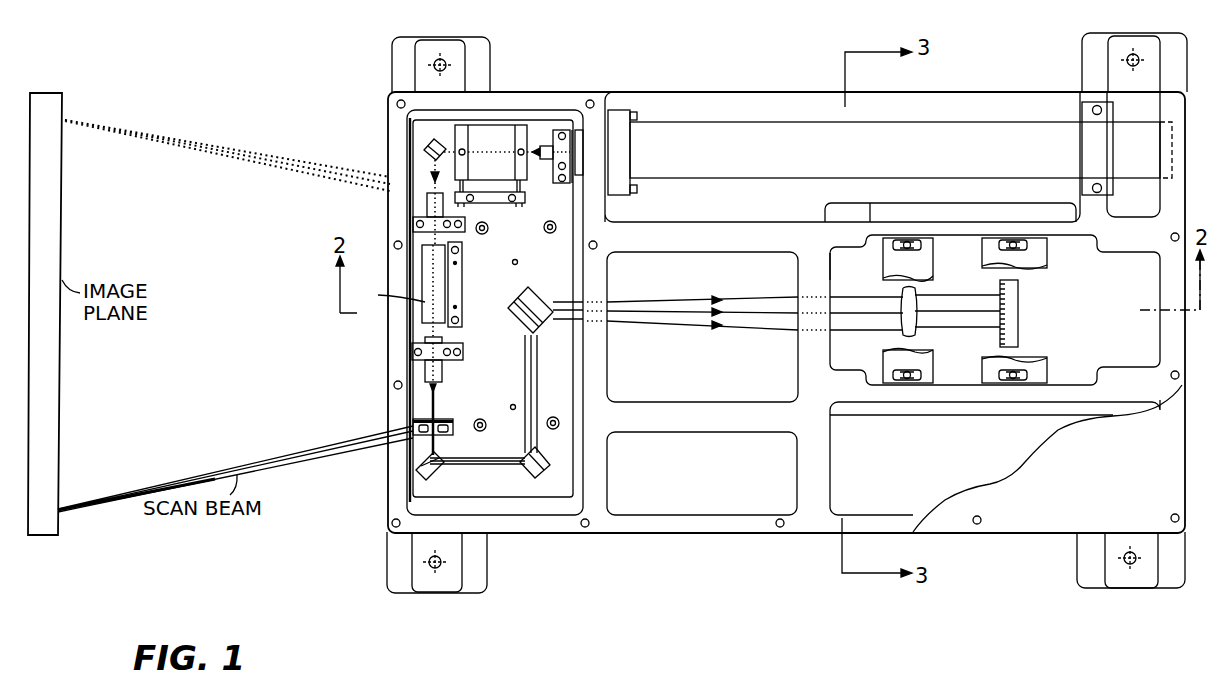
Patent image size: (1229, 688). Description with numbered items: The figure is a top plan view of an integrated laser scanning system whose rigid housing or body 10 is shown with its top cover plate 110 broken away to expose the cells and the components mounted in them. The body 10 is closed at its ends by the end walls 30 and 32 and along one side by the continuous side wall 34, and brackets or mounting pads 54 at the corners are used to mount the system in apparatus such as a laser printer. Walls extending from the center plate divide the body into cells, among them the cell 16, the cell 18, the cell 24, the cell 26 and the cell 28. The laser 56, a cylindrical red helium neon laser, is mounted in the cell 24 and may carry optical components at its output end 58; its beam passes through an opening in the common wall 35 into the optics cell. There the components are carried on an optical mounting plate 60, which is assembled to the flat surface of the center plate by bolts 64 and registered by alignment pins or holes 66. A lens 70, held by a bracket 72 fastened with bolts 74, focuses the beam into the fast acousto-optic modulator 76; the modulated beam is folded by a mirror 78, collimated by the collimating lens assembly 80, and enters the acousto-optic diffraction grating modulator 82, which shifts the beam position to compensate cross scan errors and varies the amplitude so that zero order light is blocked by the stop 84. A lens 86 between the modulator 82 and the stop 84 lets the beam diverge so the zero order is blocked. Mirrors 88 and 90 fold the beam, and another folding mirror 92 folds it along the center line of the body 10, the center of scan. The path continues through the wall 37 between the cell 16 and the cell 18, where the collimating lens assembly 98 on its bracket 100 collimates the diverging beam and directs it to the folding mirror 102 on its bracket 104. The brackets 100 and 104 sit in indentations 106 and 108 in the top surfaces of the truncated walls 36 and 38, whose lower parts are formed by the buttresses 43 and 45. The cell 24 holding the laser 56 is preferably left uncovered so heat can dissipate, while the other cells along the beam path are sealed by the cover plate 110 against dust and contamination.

The housing or body 10 is at (944, 78).
The cell 16 is at (765, 288).
The cell 18 is at (1135, 356).
The cell 24 is at (741, 207).
The cell 26 is at (762, 486).
The cell 28 is at (905, 486).
The end wall 30 is at (388, 207).
The end wall 32 is at (1186, 455).
The side of the body 34 is at (686, 535).
The common wall 35 is at (612, 217).
The wall of the cell 18 36 is at (870, 203).
The wall 37 is at (800, 352).
The wall of the cell 18 38 is at (972, 407).
The buttress 43 is at (993, 203).
The buttress 45 is at (877, 414).
The brackets or mounting pads 54 is at (480, 40).
The laser 56 is at (700, 130).
The output end of the laser 58 is at (612, 122).
The optical mounting plate (OMP) 60 is at (566, 286).
The bolts 64 is at (544, 228).
The alignment pins or holes 66 is at (518, 264).
The lens 70 is at (568, 149).
The bracket 72 is at (566, 165).
The bolts 74 is at (559, 131).
The fast acousto-optic modulator (AO1) 76 is at (495, 125).
The mirror 78 is at (424, 146).
The collimating lens assembly 80 is at (413, 228).
The acousto-optic diffraction grating modulator (AO2) 82 is at (422, 268).
The stop 84 is at (413, 427).
The lens 86 is at (412, 352).
The mirror 88 is at (437, 472).
The mirror 90 is at (524, 472).
The folding mirror 92 is at (518, 300).
The collimating lens assembly 98 is at (917, 330).
The bracket 100 is at (933, 258).
The folding mirror 102 is at (1020, 322).
The bracket 104 is at (1047, 255).
The indentation 106 is at (866, 255).
The indentation 108 is at (870, 377).
The cover plate 110 is at (998, 480).